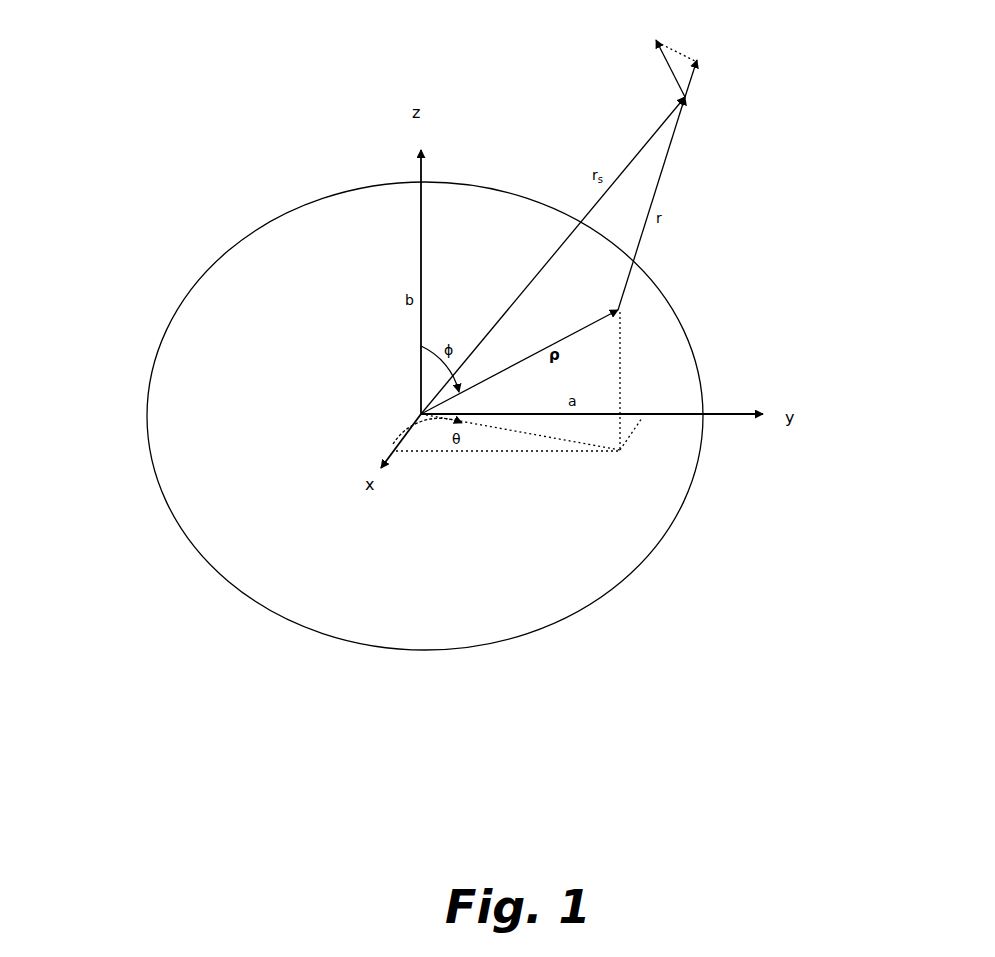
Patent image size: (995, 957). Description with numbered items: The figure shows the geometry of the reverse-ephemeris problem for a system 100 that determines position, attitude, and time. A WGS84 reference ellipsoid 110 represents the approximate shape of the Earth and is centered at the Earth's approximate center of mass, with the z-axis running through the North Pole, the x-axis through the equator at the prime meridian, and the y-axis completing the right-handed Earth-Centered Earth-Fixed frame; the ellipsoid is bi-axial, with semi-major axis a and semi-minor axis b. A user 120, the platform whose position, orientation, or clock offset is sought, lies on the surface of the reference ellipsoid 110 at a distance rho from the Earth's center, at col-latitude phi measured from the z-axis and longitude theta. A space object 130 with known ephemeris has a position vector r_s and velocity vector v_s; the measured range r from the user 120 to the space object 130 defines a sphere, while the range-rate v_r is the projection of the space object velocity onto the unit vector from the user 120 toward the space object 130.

The system 100 is at (150, 83).
The WGS84 reference ellipsoid 110 is at (207, 270).
The user 120 is at (620, 311).
The space object 130 is at (690, 97).